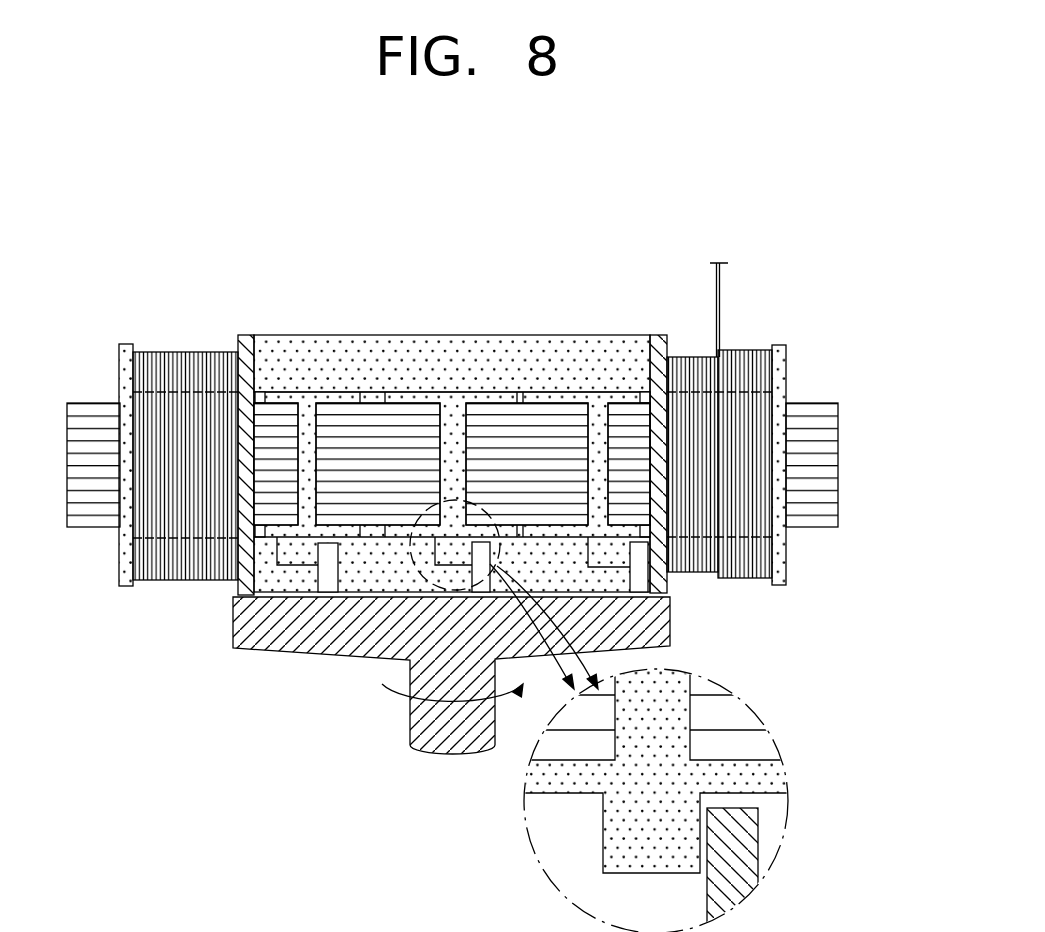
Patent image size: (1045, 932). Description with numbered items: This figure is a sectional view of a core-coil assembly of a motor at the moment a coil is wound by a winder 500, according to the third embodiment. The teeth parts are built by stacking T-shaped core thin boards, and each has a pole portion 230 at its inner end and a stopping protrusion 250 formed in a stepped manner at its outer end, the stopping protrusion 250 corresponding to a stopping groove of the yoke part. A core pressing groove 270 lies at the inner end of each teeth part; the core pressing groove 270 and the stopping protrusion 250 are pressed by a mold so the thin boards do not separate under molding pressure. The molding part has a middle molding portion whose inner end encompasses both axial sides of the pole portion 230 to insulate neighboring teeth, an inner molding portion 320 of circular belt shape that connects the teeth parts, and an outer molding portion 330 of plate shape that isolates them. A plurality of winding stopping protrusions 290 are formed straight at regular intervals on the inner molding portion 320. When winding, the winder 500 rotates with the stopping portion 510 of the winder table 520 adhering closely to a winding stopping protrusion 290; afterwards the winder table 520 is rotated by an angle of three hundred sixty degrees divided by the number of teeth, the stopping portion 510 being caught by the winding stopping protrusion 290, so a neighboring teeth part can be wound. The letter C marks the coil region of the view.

The pole portion 230 is at (342, 423).
The stopping protrusion 250 is at (813, 458).
The core pressing groove 270 is at (532, 400).
The winding stopping protrusion 290 is at (293, 548).
The inner molding portion 320 is at (407, 337).
The outer molding portion 330 is at (778, 358).
The winder 500 is at (498, 573).
The stopping portion 510 is at (330, 577).
The winder table 520 is at (650, 627).
The terminal pin C is at (742, 358).